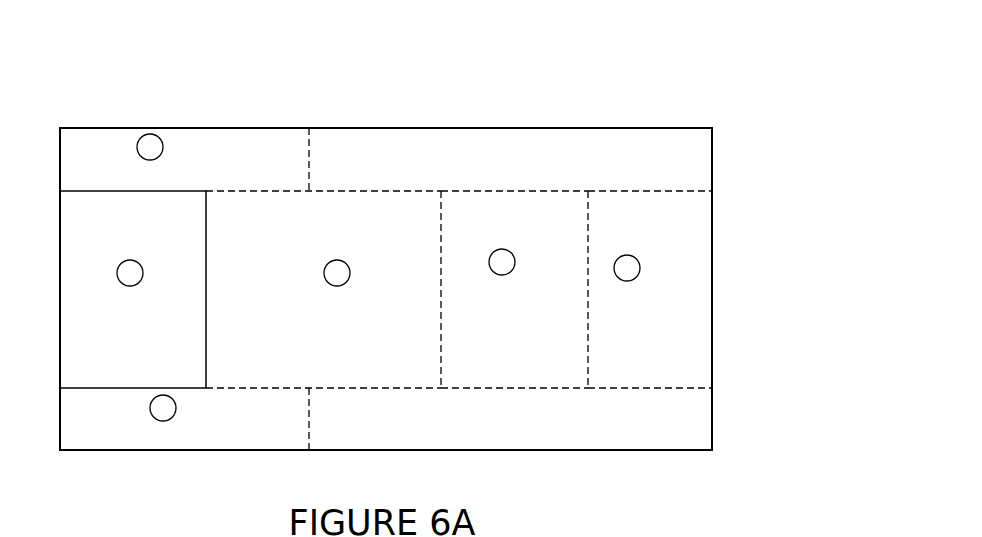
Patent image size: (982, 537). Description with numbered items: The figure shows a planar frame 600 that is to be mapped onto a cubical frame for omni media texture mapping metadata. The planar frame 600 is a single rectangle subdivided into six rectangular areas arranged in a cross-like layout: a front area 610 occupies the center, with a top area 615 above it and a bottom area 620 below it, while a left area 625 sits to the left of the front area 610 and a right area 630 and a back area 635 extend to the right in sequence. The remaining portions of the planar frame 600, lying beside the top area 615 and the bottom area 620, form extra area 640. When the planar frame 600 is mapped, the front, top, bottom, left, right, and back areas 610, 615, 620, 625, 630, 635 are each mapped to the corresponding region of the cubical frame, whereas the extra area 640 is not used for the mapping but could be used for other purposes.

The planar frame 600 is at (252, 44).
The front area 610 is at (372, 191).
The top area 615 is at (228, 128).
The bottom area 620 is at (160, 450).
The left area 625 is at (100, 191).
The right area 630 is at (513, 191).
The back area 635 is at (637, 191).
The extra area 640 is at (435, 128).